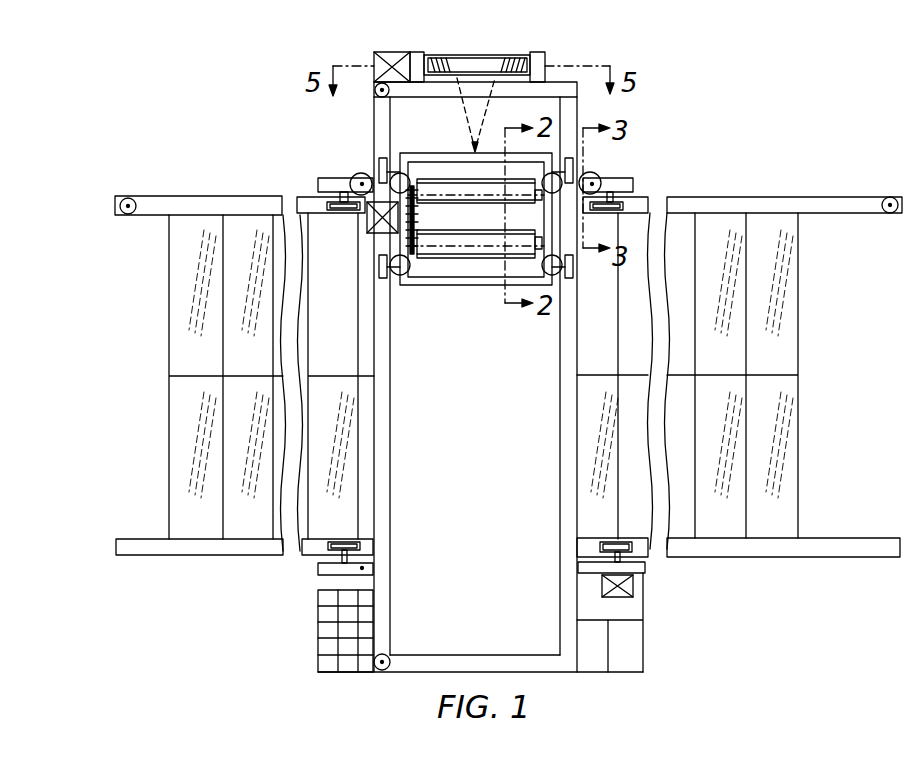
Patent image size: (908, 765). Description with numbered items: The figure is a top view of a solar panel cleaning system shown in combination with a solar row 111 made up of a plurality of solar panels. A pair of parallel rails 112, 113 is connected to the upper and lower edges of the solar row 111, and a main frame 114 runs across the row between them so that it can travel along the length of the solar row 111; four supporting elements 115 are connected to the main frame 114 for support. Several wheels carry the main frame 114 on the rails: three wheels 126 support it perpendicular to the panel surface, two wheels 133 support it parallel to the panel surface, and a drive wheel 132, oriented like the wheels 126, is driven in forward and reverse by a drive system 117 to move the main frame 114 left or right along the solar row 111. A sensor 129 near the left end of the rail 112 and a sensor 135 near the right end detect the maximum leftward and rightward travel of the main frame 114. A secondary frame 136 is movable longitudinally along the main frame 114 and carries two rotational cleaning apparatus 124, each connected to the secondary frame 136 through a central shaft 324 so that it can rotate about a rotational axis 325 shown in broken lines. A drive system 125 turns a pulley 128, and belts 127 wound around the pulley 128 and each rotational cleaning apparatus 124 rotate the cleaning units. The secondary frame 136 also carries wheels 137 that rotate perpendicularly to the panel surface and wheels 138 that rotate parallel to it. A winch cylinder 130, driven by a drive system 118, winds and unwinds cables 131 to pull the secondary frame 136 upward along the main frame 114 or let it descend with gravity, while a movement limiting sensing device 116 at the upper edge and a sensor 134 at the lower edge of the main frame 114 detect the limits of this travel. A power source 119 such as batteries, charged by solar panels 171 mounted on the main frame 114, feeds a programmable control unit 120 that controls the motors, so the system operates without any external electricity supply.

The solar row 111 is at (168, 333).
The rail 112 is at (213, 197).
The rail 113 is at (142, 538).
The main frame 114 is at (392, 513).
The supporting elements 115 is at (323, 177).
The movement limiting sensing device 116 is at (385, 98).
The drive system 117 is at (633, 585).
The drive system 118 is at (397, 53).
The power source 119 is at (610, 672).
The programmable control unit 120 is at (643, 617).
The rotational cleaning apparatus 124 is at (463, 178).
The drive system 125 is at (383, 235).
The wheels 126 is at (328, 203).
The belts 127 is at (401, 258).
The pulley 128 is at (418, 221).
The sensor 129 is at (118, 203).
The winch cylinder 130 is at (498, 55).
The cables 131 is at (489, 100).
The drive wheel 132 is at (633, 548).
The wheels 133 is at (362, 172).
The sensor 134 is at (388, 655).
The sensor 135 is at (885, 202).
The secondary frame 136 is at (473, 287).
The wheels 137 is at (383, 278).
The wheels 138 is at (558, 283).
The solar panels 171 is at (318, 615).
The central shaft 324 is at (558, 237).
The rotational axis 325 is at (425, 200).